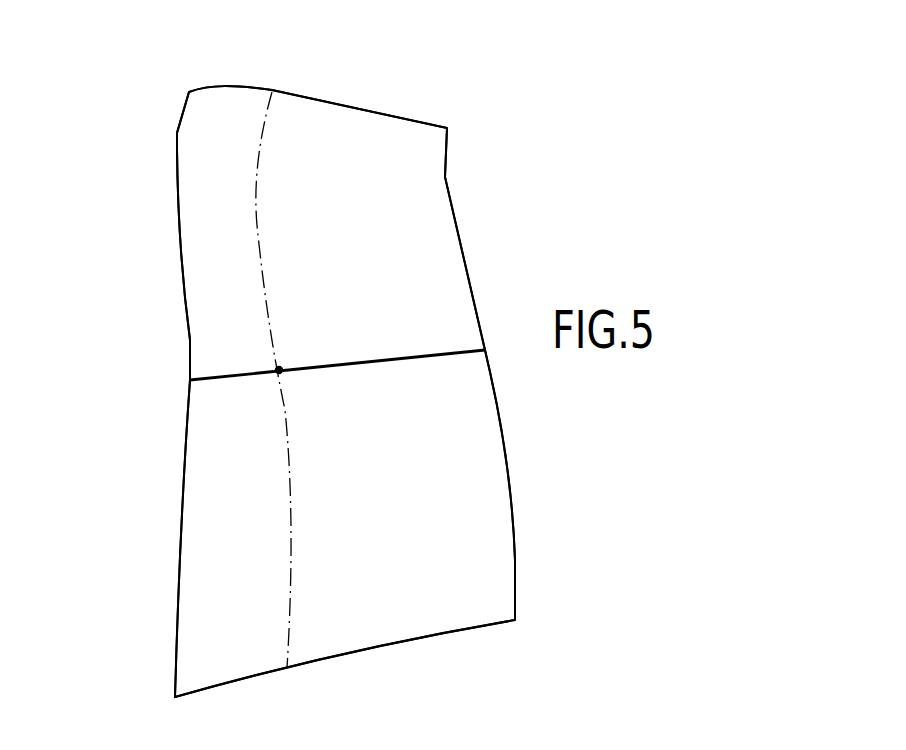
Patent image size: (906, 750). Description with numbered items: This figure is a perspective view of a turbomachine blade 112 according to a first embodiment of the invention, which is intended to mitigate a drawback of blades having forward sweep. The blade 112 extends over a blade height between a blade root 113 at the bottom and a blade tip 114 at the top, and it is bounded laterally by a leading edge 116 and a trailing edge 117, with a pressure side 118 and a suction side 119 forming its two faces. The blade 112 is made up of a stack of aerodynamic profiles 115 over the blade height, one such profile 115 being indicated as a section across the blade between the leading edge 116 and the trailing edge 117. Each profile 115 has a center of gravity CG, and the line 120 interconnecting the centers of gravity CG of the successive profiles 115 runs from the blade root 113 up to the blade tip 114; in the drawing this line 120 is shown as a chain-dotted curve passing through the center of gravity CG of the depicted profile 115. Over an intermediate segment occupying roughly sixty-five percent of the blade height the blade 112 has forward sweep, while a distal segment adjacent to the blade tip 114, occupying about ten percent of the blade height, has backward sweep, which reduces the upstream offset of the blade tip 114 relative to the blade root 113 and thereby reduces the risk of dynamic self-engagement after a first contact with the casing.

The blade 112 is at (82, 154).
The blade root 113 is at (413, 638).
The blade tip 114 is at (330, 97).
The aerodynamic profiles 115 is at (402, 359).
The leading edge 116 is at (184, 433).
The trailing edge 117 is at (508, 450).
The pressure side 118 is at (175, 281).
The suction side 119 is at (423, 233).
The line interconnecting the centers of gravity 120 is at (258, 222).
The center of gravity CG is at (279, 370).